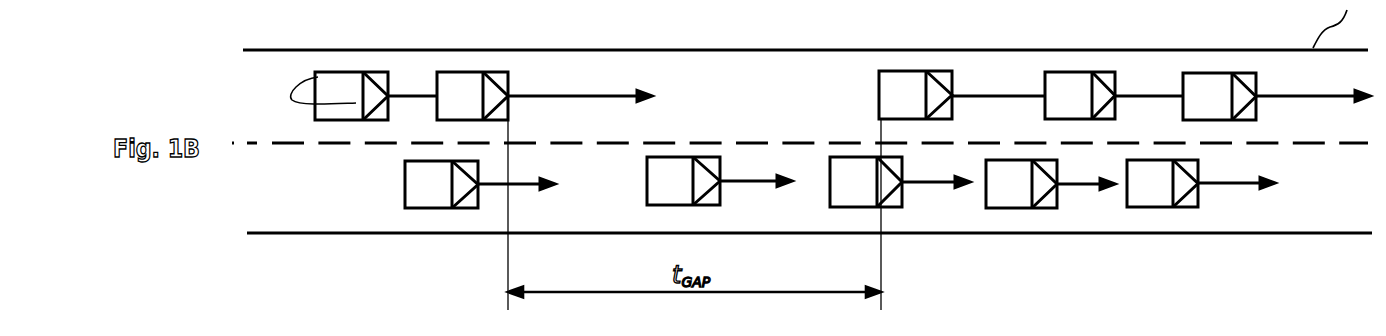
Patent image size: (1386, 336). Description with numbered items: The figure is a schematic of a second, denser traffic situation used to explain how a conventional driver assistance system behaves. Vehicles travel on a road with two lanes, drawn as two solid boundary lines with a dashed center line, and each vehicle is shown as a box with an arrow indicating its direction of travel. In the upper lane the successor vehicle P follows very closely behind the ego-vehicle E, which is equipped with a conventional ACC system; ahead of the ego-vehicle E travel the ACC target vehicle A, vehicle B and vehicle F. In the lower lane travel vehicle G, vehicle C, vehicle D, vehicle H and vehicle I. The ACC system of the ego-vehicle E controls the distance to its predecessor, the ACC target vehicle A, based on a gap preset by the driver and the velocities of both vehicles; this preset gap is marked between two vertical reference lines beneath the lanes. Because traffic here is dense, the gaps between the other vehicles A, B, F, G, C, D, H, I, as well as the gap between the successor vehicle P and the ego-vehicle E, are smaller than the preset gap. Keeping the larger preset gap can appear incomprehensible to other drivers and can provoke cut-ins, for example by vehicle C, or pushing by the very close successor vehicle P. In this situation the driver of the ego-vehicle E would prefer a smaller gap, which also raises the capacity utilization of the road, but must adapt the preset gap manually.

The successor vehicle P is at (337, 72).
The ego-vehicle E is at (463, 72).
The ACC target vehicle A is at (909, 71).
The vehicle B is at (1068, 72).
The vehicle F is at (1215, 73).
The vehicle G is at (430, 208).
The vehicle C is at (720, 205).
The vehicle D is at (895, 207).
The vehicle H is at (1015, 208).
The vehicle I is at (1148, 207).